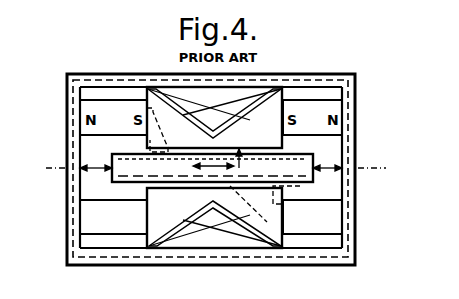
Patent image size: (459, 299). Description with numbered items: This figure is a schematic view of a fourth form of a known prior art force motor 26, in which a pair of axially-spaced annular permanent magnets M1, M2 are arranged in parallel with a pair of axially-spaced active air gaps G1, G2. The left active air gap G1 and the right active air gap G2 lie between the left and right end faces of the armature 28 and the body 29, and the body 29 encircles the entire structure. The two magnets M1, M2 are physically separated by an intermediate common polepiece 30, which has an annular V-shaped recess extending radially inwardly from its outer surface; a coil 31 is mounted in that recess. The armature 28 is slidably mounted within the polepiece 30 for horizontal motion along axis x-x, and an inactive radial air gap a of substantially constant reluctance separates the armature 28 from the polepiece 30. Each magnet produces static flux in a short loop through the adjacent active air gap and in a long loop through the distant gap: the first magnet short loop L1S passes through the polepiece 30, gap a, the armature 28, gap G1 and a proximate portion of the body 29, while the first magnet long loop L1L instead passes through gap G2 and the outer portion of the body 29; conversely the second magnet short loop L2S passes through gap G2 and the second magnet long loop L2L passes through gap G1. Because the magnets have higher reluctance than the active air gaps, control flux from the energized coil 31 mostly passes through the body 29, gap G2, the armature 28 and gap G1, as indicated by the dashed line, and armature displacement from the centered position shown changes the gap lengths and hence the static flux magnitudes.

The force motor 26 is at (294, 76).
The armature 28 is at (300, 147).
The body 29 is at (118, 79).
The intermediate common polepiece 30 is at (268, 139).
The coil 31 is at (215, 240).
The first magnet long loop L1L is at (97, 80).
The first magnet short loop L1S is at (80, 127).
The second magnet short loop L2S is at (352, 186).
The second magnet long loop L2L is at (318, 257).
The first permanent magnet M1 is at (83, 210).
The second permanent magnet M2 is at (343, 222).
The left active air gap G1 is at (96, 172).
The right active air gap G2 is at (327, 172).
The axis x- x is at (213, 169).
The inactive radial air gap a is at (239, 168).